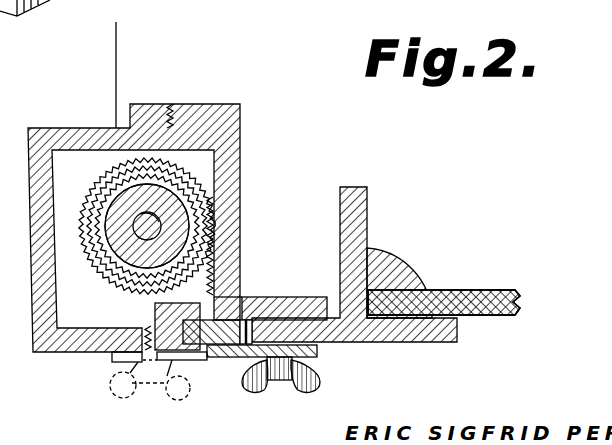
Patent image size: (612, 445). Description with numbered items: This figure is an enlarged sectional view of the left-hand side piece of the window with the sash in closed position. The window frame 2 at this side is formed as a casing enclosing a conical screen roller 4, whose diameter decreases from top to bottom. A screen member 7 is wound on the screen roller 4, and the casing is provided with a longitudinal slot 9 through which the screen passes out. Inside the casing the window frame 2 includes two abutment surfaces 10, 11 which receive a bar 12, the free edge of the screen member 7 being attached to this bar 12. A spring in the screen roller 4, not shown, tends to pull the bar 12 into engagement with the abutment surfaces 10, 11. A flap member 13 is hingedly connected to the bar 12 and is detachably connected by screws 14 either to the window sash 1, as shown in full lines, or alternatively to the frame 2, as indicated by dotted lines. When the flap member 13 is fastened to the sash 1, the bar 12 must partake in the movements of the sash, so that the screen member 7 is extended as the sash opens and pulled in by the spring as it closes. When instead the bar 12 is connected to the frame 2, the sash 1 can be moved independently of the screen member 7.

The window sash 1 is at (430, 342).
The window frame 2 is at (240, 148).
The screen roller 4 is at (211, 208).
The screen member 7 is at (215, 272).
The longitudinal slot 9 is at (243, 294).
The abutment surface 10 is at (158, 311).
The abutment surface 11 is at (262, 296).
The bar 12 is at (190, 353).
The flap member 13 is at (313, 352).
The screws 14 is at (320, 382).